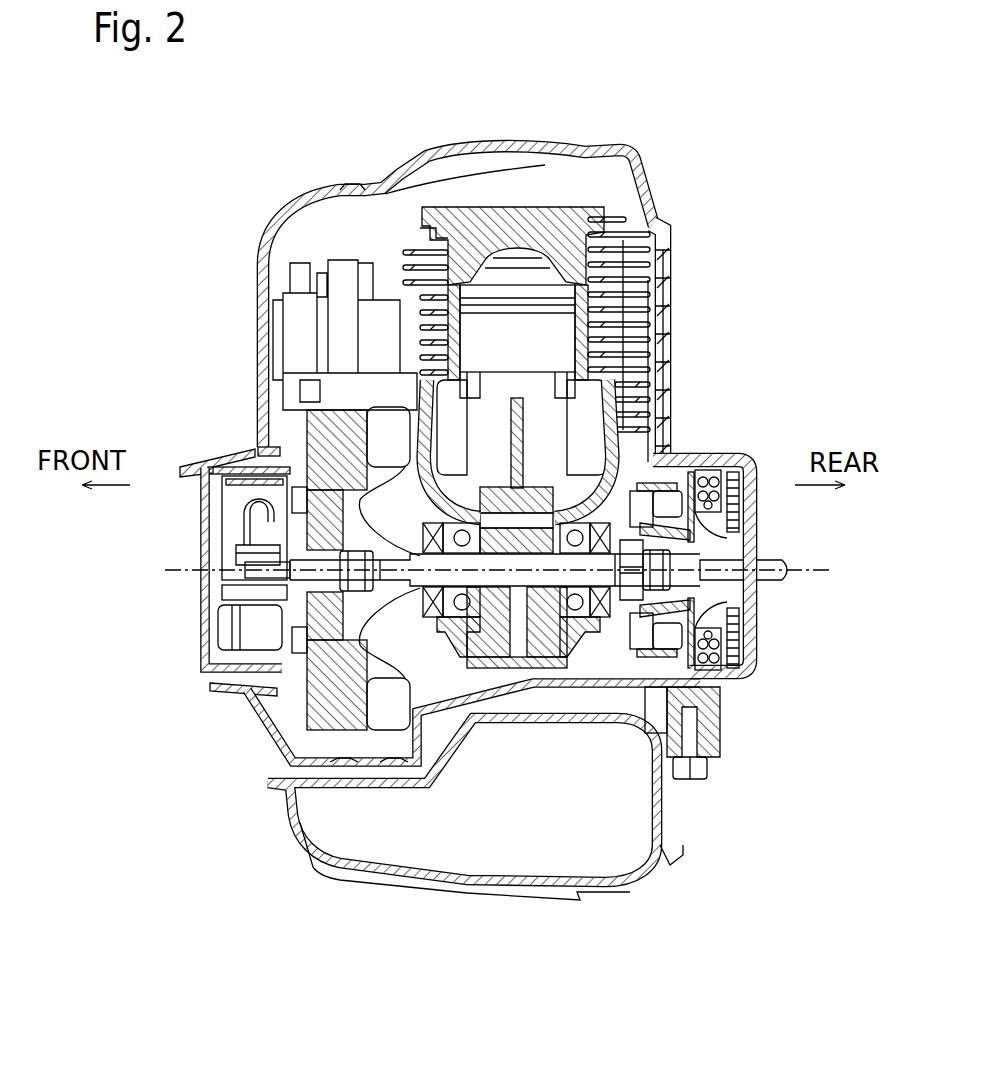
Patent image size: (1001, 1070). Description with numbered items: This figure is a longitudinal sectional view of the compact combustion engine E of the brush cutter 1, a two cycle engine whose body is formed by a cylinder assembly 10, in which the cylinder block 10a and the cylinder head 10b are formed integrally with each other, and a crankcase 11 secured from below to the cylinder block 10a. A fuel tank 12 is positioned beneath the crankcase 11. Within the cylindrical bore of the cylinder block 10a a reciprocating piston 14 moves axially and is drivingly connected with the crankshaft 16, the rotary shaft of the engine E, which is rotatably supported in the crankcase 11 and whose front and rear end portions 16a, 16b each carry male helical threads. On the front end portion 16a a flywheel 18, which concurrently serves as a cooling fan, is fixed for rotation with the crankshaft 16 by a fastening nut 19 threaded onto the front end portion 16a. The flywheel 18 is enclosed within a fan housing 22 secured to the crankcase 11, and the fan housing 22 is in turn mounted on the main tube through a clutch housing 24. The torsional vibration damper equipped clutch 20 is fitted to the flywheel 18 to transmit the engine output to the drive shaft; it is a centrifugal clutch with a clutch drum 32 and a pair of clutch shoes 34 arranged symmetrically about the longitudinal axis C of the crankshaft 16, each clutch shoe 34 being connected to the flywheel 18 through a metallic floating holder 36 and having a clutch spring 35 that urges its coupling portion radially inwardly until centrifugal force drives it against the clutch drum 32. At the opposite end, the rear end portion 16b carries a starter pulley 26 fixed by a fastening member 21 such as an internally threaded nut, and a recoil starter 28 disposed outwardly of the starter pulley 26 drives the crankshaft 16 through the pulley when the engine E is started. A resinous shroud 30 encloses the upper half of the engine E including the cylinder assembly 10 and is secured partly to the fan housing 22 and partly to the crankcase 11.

The brush cutter 1 is at (186, 201).
The combustion engine E is at (309, 179).
The cylinder assembly 10 is at (551, 200).
The cylinder block 10a is at (427, 237).
The cylinder head 10b is at (498, 210).
The shroud 30 is at (426, 156).
The reciprocating piston 14 is at (655, 338).
The floating holder 36 is at (335, 458).
The clutch drum 32 is at (236, 466).
The clutch housing 24 is at (195, 462).
The torsional vibration damper equipped clutch 20 is at (191, 499).
The clutch spring 35 is at (250, 533).
The crankshaft 16 is at (410, 586).
The front end portion of the crankshaft 16a is at (246, 585).
The rear end portion of the crankshaft 16b is at (748, 588).
The clutch shoe 34 is at (245, 655).
The fan housing 22 is at (260, 718).
The flywheel 18 is at (338, 715).
The fastening nut 19 is at (360, 592).
The crankcase 11 is at (531, 662).
The fastening member 21 is at (683, 677).
The fuel tank 12 is at (660, 832).
The starter pulley 26 is at (657, 483).
The recoil starter 28 is at (763, 535).
The longitudinal axis of the crankshaft C is at (798, 566).